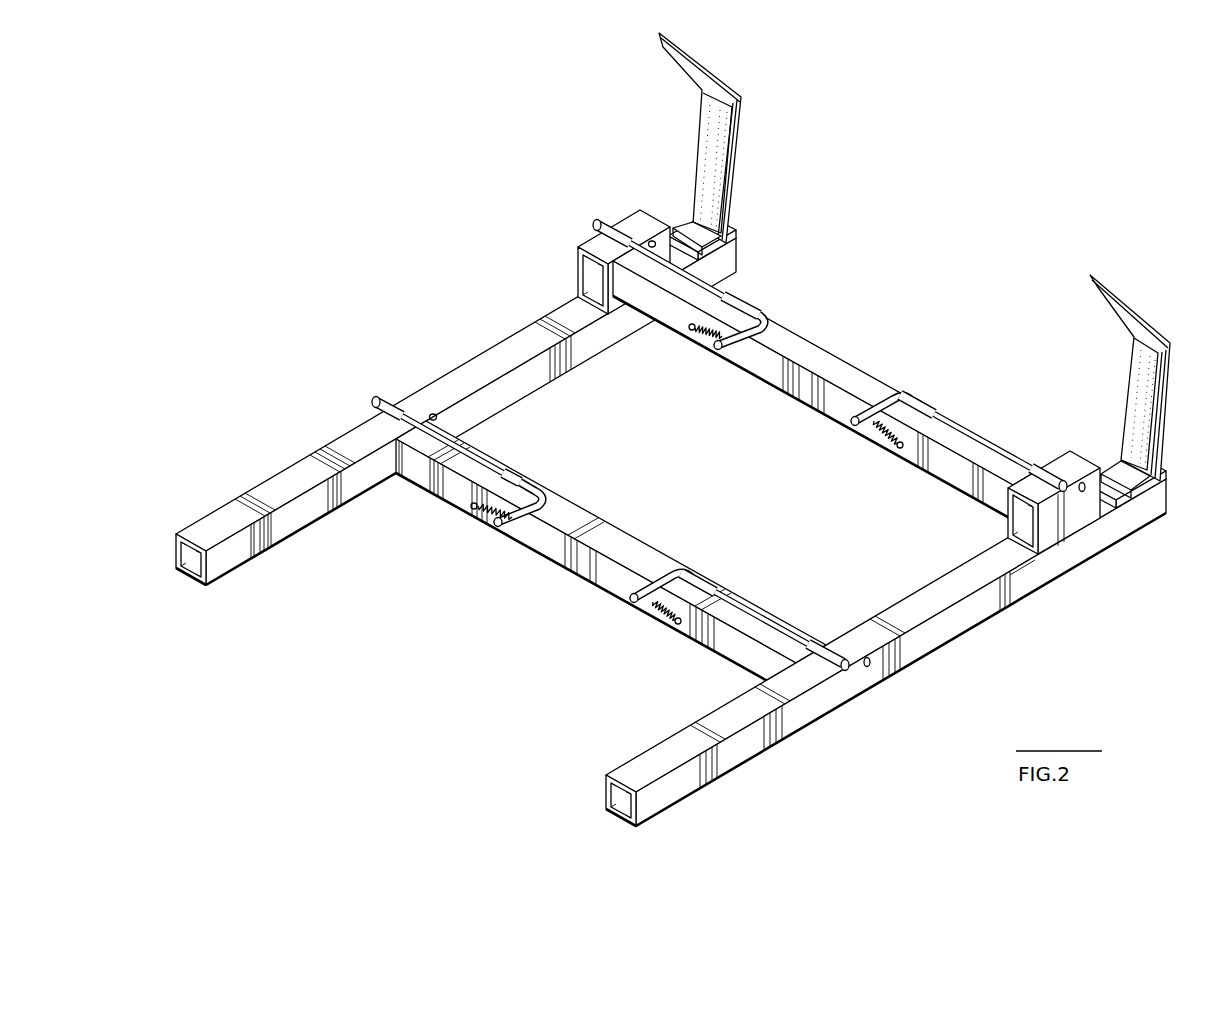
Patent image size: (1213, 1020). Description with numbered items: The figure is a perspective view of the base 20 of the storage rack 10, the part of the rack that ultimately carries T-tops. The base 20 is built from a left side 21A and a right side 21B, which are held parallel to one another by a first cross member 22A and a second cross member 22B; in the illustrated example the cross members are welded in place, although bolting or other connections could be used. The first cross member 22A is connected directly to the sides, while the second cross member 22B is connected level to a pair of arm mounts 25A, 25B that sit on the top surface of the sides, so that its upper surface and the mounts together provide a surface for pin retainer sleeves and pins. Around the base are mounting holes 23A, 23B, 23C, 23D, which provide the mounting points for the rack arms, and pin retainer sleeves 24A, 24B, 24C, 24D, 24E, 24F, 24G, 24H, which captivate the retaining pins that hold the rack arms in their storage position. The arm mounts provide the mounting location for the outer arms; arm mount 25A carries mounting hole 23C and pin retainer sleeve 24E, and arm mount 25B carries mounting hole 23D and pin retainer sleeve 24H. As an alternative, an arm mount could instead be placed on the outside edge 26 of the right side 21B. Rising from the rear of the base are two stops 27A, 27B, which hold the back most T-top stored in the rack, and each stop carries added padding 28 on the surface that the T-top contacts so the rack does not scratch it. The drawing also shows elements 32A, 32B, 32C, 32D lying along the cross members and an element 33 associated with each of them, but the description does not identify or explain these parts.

The storage rack 10 is at (671, 429).
The base 20 is at (660, 429).
The left side 21A is at (303, 470).
The right side 21B is at (728, 710).
The first cross member 22A is at (545, 540).
The second cross member 22B is at (787, 333).
The mounting hole 23A is at (867, 665).
The mounting hole 23B is at (433, 414).
The mounting hole 23C is at (1085, 490).
The mounting hole 23D is at (652, 220).
The pin retainer sleeve 24A is at (823, 663).
The pin retainer sleeve 24B is at (690, 572).
The pin retainer sleeve 24C is at (523, 473).
The pin retainer sleeve 24D is at (402, 410).
The pin retainer sleeve 24E is at (1043, 468).
The pin retainer sleeve 24F is at (923, 395).
The pin retainer sleeve 24G is at (757, 300).
The pin retainer sleeve 24H is at (625, 222).
The arm mount 25A is at (1072, 523).
The arm mount 25B is at (593, 243).
The outside edge 26 is at (1022, 582).
The stop 27A is at (1088, 278).
The stop 27B is at (743, 217).
The padding 28 is at (1117, 317).
The locking rod 32A is at (967, 420).
The locking rod 32B is at (737, 595).
The locking rod 32C is at (470, 447).
The locking rod 32D is at (707, 282).
The spring 33 is at (490, 510).